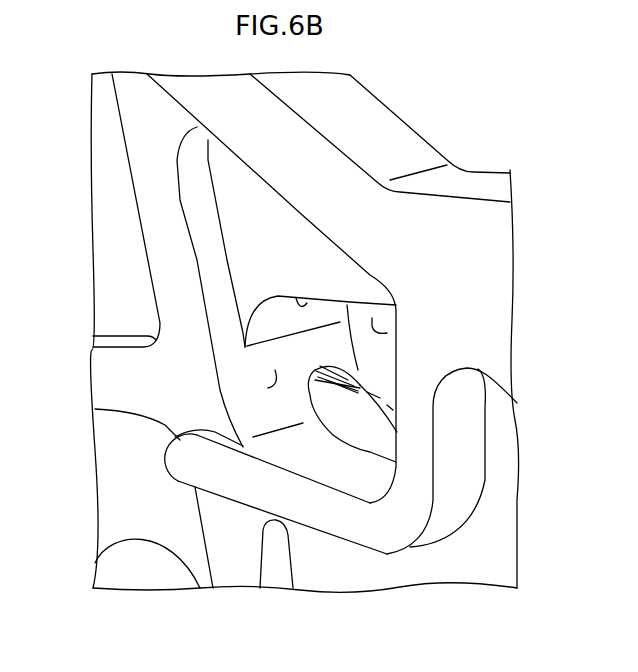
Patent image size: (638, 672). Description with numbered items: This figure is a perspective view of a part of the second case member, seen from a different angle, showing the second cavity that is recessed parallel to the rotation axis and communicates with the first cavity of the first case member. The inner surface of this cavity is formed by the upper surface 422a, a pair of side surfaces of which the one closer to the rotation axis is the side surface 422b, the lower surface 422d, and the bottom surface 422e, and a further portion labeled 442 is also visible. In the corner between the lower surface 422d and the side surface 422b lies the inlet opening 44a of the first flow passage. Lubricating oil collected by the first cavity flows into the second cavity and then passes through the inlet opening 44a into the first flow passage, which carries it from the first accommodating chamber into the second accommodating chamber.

The upper surface 422a is at (300, 300).
The side surface 422b is at (268, 388).
The lower surface 422d is at (306, 470).
The bottom surface 422e is at (390, 333).
The bottom surface 442 is at (283, 352).
The inlet opening 44a is at (340, 397).